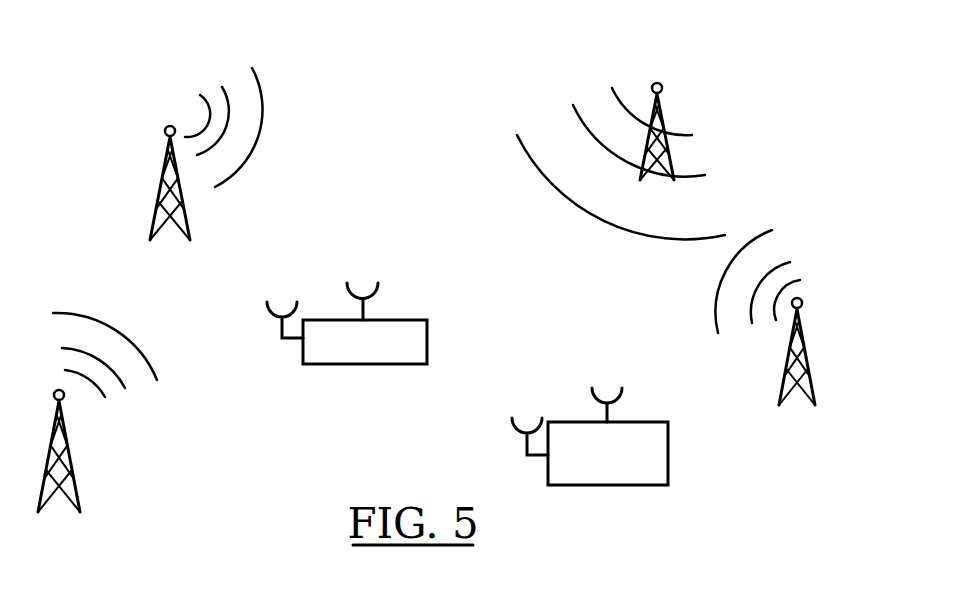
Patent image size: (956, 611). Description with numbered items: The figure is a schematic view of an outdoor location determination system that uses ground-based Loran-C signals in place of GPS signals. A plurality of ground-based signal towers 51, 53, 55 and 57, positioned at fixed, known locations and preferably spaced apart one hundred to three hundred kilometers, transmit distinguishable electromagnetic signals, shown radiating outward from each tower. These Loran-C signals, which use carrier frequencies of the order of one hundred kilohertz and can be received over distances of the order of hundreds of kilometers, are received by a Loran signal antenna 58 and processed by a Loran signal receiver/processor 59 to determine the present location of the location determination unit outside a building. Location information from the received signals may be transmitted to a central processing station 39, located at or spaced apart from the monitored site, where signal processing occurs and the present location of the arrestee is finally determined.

The ground-based signal tower 51 is at (165, 127).
The ground-based signal tower 53 is at (661, 85).
The ground-based signal tower 55 is at (802, 299).
The ground-based signal tower 57 is at (67, 445).
The Loran signal antenna 58 is at (368, 308).
The Loran signal receiver/processor 59 is at (374, 307).
The central processing station 39 is at (613, 412).